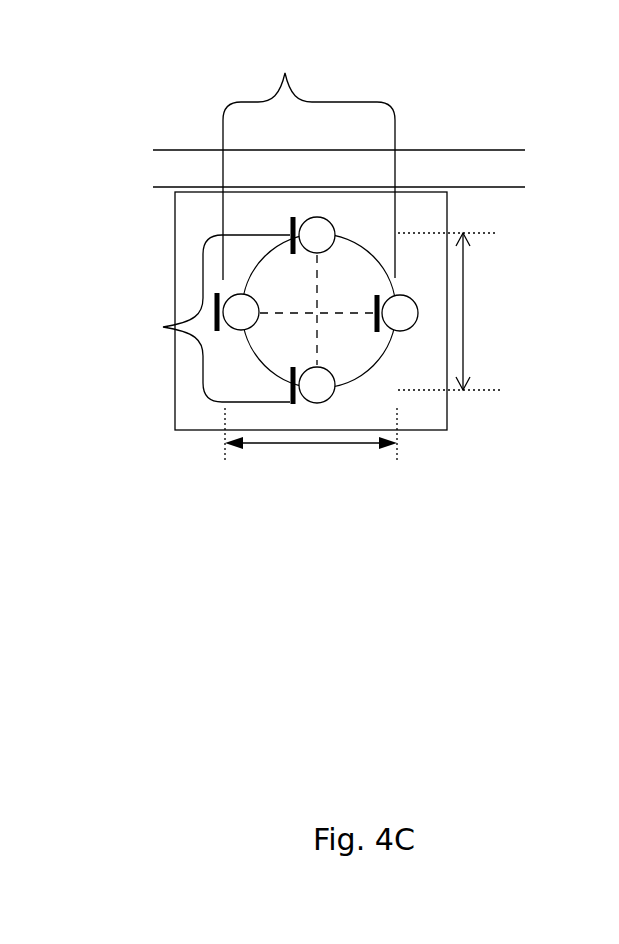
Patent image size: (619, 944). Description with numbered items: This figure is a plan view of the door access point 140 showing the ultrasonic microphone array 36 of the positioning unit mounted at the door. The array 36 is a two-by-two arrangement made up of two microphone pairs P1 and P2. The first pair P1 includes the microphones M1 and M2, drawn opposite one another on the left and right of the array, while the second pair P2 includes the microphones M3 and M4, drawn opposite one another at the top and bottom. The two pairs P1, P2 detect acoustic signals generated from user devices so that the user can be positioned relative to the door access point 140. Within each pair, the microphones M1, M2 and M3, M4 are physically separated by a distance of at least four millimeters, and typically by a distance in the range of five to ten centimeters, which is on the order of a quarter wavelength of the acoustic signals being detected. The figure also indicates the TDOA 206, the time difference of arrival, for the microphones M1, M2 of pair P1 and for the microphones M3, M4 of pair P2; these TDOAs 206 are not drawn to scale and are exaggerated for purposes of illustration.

The ultrasonic microphone array 36 is at (348, 273).
The door access point 140 is at (367, 180).
The TDOA 206 is at (333, 443).
The microphone pair P1 is at (309, 159).
The microphone pair P2 is at (209, 318).
The microphone M1 is at (233, 328).
The microphone M2 is at (408, 329).
The microphone M3 is at (314, 223).
The microphone M4 is at (314, 398).